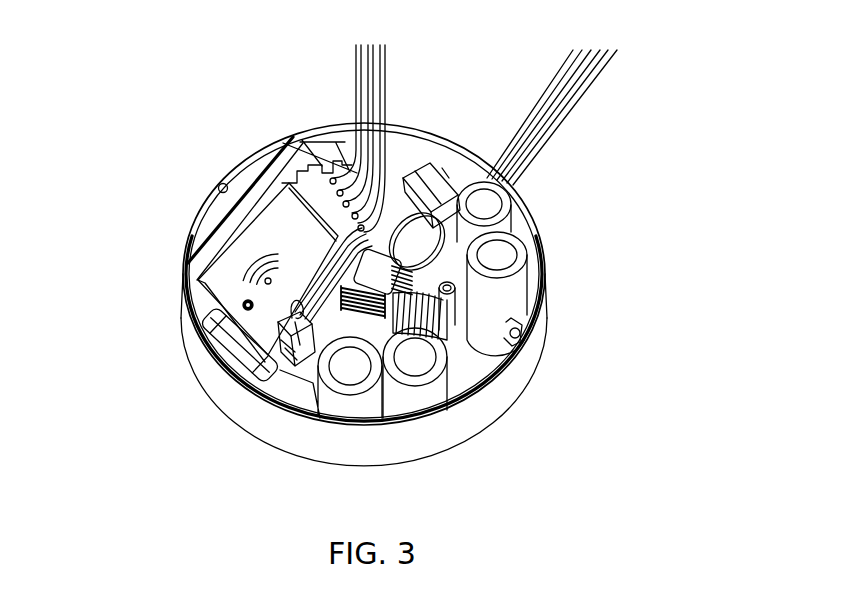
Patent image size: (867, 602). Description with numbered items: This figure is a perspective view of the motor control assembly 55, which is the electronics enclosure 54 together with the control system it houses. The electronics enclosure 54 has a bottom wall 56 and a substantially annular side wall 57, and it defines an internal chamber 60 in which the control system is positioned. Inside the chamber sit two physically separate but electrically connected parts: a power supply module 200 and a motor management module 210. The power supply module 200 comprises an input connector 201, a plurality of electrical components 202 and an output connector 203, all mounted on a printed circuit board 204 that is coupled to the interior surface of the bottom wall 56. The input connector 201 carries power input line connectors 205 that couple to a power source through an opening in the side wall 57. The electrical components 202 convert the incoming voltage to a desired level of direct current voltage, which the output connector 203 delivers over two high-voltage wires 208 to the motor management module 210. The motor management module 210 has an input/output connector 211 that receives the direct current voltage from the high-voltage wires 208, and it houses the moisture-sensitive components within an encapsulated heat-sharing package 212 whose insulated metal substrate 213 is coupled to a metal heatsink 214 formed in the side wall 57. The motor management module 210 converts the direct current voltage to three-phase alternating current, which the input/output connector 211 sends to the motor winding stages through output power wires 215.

The electronics enclosure 54 is at (535, 233).
The motor control assembly 55 is at (138, 133).
The bottom wall 56 is at (393, 466).
The side wall 57 is at (472, 410).
The internal chamber 60 is at (345, 125).
The power supply module 200 is at (284, 390).
The input connector 201 is at (440, 188).
The electrical components 202 is at (420, 373).
The output connector 203 is at (300, 392).
The printed circuit board 204 is at (288, 368).
The power input line connectors 205 is at (560, 122).
The high-voltage wires 208 is at (258, 357).
The motor management module 210 is at (180, 301).
The input/output connector 211 is at (320, 168).
The heat-sharing package 212 is at (194, 266).
The insulated metal substrate 213 is at (220, 253).
The metal heatsink 214 is at (233, 240).
The output power wires 215 is at (388, 82).